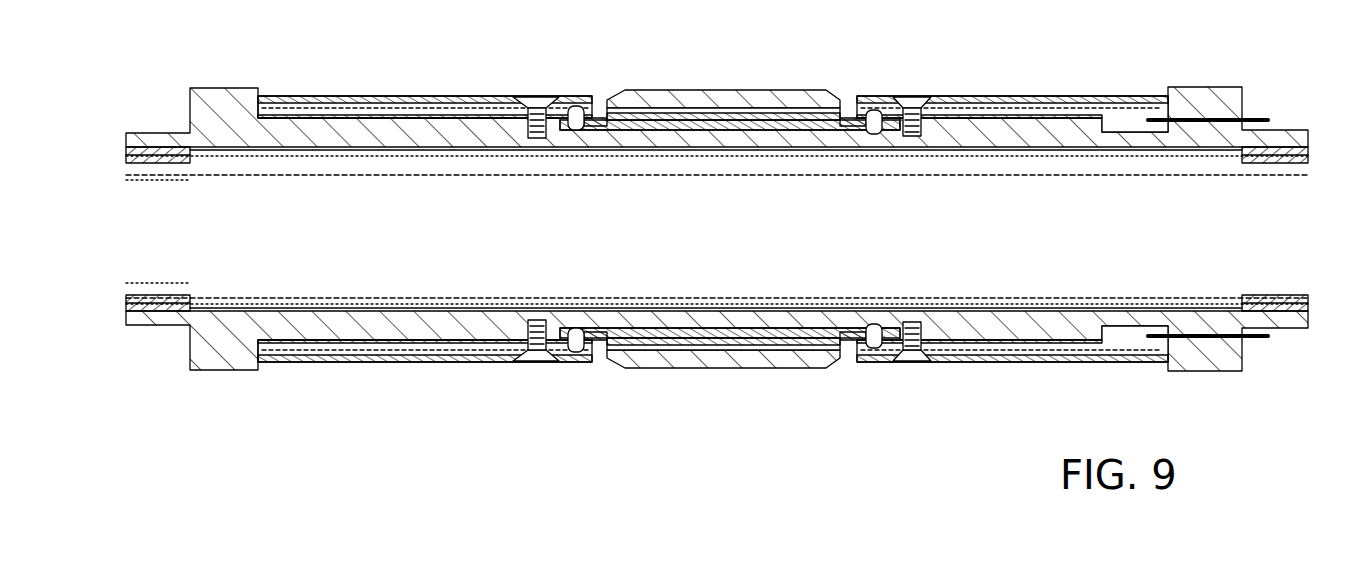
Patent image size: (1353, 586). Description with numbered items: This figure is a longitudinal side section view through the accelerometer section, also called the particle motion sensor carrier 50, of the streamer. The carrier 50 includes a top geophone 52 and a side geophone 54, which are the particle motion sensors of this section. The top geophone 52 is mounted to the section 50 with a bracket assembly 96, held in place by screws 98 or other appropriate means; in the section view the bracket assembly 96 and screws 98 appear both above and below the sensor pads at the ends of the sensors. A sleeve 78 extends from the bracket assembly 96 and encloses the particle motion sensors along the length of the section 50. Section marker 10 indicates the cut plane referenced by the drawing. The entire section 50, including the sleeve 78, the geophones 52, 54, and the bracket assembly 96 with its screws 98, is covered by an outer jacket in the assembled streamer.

The section line 10- 10 is at (725, 46).
The particle motion sensor carrier 50 is at (1004, 77).
The top geophone 52 is at (816, 77).
The side geophone 54 is at (647, 381).
The sleeve 78 is at (373, 96).
The bracket assembly 96 is at (582, 100).
The screws 98 is at (538, 97).